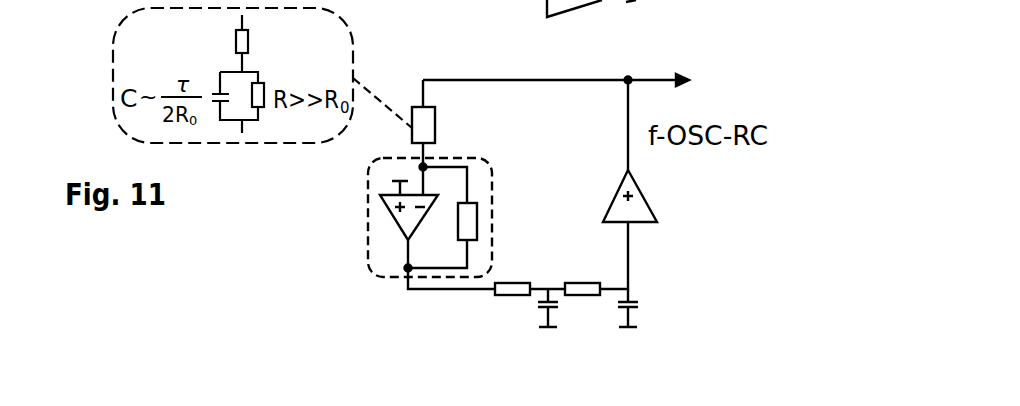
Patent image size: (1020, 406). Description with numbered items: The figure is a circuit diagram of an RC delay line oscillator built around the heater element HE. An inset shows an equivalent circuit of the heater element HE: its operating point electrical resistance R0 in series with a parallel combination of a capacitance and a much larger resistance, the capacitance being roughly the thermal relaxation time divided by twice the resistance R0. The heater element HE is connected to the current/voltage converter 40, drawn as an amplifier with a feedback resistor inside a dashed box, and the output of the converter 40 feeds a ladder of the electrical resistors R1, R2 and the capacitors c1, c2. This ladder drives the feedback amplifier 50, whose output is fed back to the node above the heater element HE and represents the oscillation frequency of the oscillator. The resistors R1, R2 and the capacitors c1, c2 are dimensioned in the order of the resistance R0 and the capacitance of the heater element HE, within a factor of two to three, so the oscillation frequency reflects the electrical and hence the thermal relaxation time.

The current/voltage converter 40 is at (483, 201).
The feedback amplifier 50 is at (648, 198).
The heater element HE is at (444, 123).
The operating point electrical resistance R0 is at (260, 43).
The electrical resistor R1 is at (512, 274).
The electrical resistor R2 is at (582, 274).
The capacitor c1 is at (560, 308).
The capacitor c2 is at (642, 308).